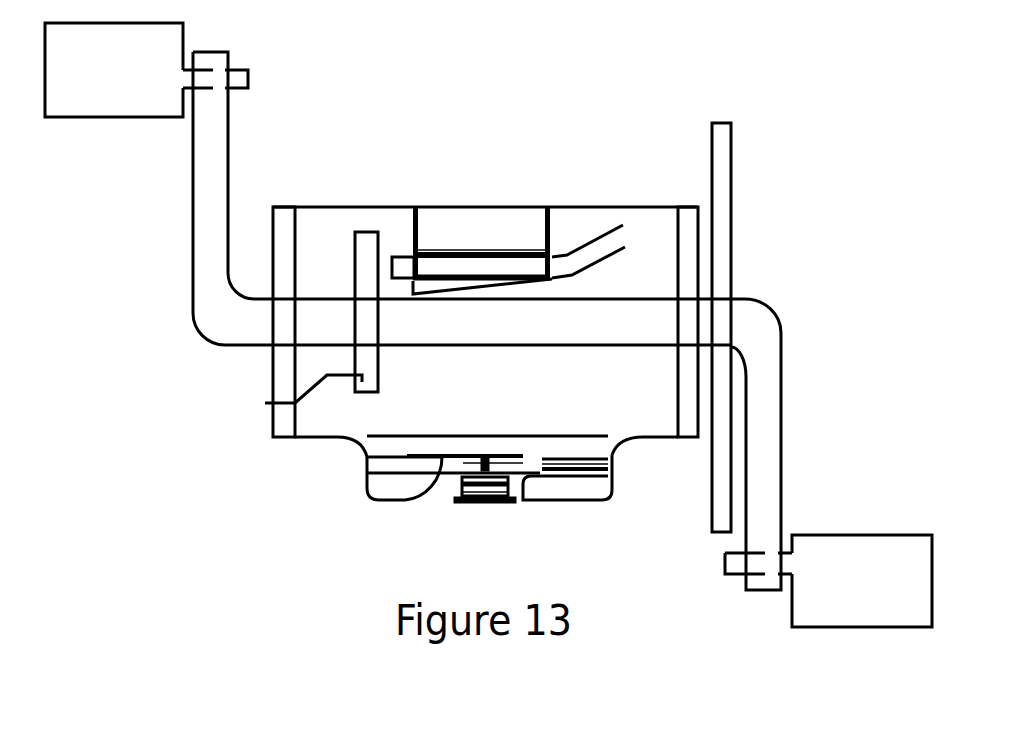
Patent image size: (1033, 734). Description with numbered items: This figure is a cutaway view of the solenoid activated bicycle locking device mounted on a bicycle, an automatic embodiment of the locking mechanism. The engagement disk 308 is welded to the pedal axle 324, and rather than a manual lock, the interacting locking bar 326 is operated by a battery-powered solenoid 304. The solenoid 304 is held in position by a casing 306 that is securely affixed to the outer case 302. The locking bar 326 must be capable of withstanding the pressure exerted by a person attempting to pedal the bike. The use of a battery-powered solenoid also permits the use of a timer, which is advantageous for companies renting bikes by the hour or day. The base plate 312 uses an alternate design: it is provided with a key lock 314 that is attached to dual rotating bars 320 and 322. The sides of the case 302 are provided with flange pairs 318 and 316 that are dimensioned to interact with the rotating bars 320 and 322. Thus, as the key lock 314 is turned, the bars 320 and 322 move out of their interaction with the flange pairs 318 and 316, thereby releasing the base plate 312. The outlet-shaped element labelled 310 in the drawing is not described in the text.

The outer case 302 is at (314, 218).
The solenoid 304 is at (531, 268).
The casing 306 is at (467, 232).
The engagement disk 308 is at (280, 400).
The outlet nozzle 310 is at (614, 228).
The base plate 312 is at (587, 498).
The key lock 314 is at (477, 505).
The flange pair 316 is at (619, 457).
The flange pair 318 is at (367, 457).
The rotating bar 320 is at (407, 500).
The rotating bar 322 is at (530, 477).
The pedal axle 324 is at (213, 287).
The locking bar 326 is at (403, 260).